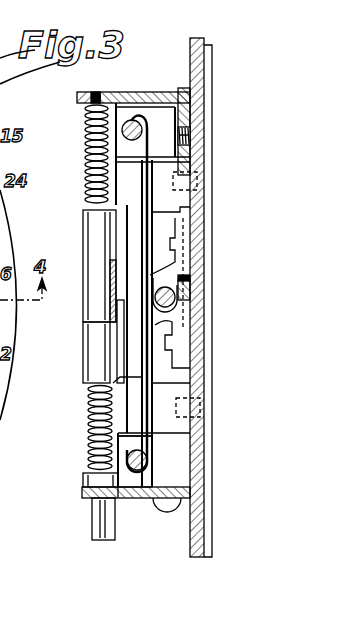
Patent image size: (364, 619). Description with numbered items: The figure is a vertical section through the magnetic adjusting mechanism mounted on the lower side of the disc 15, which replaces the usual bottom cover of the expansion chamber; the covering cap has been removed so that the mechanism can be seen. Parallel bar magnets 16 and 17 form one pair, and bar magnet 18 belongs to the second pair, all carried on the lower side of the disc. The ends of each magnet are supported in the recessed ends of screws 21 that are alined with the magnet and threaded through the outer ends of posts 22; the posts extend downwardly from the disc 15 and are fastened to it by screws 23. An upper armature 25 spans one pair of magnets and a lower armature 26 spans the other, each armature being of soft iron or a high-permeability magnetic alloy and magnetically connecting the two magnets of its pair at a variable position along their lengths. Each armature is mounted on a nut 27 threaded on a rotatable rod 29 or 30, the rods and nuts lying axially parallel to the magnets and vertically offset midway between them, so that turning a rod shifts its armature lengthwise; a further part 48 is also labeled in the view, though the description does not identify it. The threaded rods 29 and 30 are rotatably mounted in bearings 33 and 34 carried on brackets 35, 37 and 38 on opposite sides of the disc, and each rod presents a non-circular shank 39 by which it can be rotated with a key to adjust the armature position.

The disc 15 is at (192, 72).
The bar magnet 16 is at (148, 92).
The bearing 33 is at (115, 92).
The bracket 37 is at (190, 117).
The screw 23 is at (185, 131).
The screw 21 is at (122, 208).
The post 22 is at (175, 178).
The rotatable rod 30 is at (85, 170).
The bar magnet 18 is at (132, 233).
The guide strip 48 is at (97, 247).
The lower armature 26 is at (120, 305).
The upper armature 25 is at (176, 219).
The nut 27 is at (168, 289).
The rotatable rod 29 is at (177, 293).
The bracket 35 is at (174, 354).
The bracket 38 is at (182, 492).
The bar magnet 17 is at (138, 472).
The bearing 34 is at (118, 500).
The non-circular shank 39 is at (93, 523).